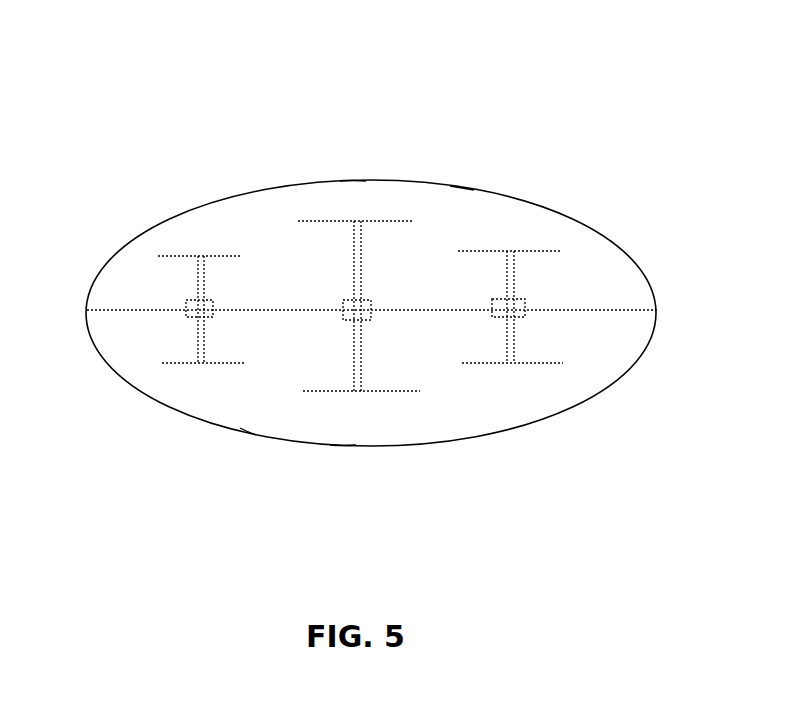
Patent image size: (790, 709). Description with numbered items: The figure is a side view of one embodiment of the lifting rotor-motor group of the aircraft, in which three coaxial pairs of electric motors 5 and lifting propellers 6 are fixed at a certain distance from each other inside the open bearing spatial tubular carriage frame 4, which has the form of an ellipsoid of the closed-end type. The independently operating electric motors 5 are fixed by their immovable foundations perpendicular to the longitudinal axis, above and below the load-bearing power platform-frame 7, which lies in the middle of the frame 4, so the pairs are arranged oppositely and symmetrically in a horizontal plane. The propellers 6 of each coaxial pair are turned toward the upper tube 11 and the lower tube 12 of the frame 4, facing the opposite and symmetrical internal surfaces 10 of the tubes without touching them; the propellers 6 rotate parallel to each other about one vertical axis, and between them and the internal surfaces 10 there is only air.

The open external carriage spatial tubular ellipsoid carriage frame 4 is at (425, 180).
The coaxial pair of independently operating electric motors 5 is at (192, 283).
The coaxial pair of lifting propellers 6 is at (178, 252).
The load-bearing power platform-frame 7 is at (408, 312).
The internal surfaces of tubes of the open bearing spatial carriage frame 10 is at (462, 188).
The upper tube of the open load-bearing spatial carriage frame 11 is at (353, 180).
The lower tube of the open load-bearing spatial carriage frame 12 is at (342, 448).